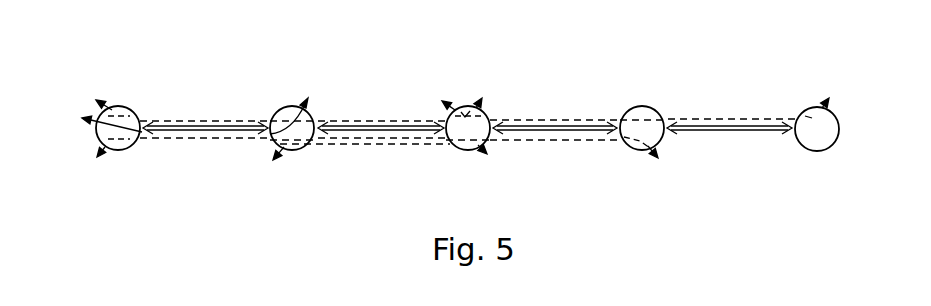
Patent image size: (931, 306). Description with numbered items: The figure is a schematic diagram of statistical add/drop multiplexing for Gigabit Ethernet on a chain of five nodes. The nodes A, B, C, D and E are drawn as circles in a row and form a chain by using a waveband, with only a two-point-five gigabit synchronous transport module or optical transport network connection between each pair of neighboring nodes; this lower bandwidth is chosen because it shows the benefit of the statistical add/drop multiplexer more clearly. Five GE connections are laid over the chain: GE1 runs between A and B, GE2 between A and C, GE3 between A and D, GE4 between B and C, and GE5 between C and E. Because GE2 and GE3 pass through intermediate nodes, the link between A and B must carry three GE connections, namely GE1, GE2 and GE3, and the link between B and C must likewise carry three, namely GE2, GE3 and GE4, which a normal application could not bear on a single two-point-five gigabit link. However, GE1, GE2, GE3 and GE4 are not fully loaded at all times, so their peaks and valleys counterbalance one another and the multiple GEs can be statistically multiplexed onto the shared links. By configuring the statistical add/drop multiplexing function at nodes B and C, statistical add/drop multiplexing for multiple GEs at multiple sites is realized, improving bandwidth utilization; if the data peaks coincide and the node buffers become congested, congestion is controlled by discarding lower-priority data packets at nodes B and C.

The node A is at (118, 153).
The node B is at (294, 152).
The node C is at (467, 152).
The node D is at (644, 156).
The node E is at (817, 152).
The GE connection between A and B GE1 is at (91, 121).
The GE connection between A and C GE2 is at (205, 111).
The GE connection between A and D GE3 is at (205, 150).
The GE connection between B and C GE4 is at (365, 153).
The GE connection between C and E GE5 is at (731, 107).